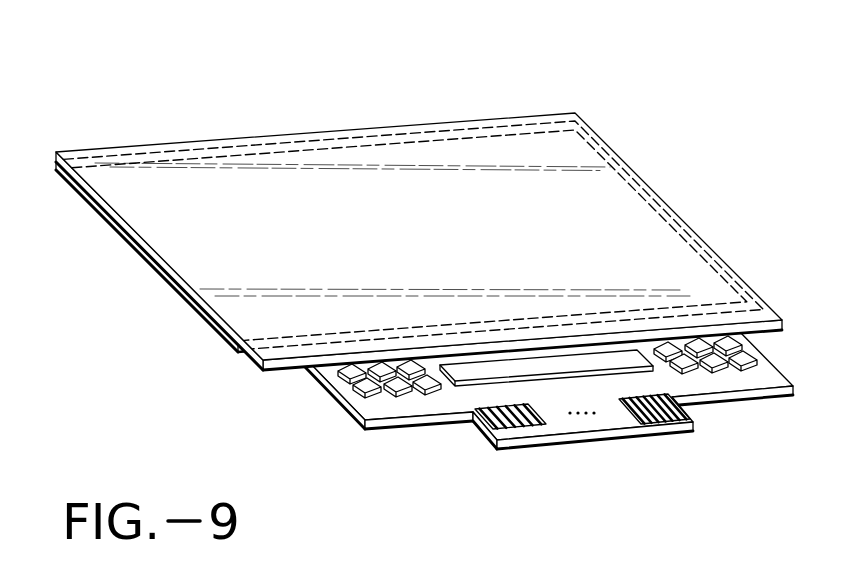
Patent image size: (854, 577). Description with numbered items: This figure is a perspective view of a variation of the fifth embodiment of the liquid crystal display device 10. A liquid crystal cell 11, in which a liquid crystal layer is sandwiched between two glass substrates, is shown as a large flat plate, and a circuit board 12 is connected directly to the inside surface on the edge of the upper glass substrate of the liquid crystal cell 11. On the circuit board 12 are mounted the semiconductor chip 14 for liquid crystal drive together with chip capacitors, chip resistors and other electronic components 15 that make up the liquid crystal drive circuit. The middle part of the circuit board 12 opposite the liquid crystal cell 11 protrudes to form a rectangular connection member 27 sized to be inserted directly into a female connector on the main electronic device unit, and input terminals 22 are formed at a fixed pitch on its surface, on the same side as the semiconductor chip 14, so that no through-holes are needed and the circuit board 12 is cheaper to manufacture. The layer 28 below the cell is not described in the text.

The liquid crystal display device 10 is at (424, 258).
The liquid crystal cell 11 is at (657, 200).
The circuit board 12 is at (458, 402).
The semiconductor chip for liquid crystal drive 14 is at (485, 370).
The electronic components 15 is at (700, 342).
The input terminals 22 is at (635, 418).
The connection member 27 is at (573, 436).
The backing layer 28 is at (287, 372).